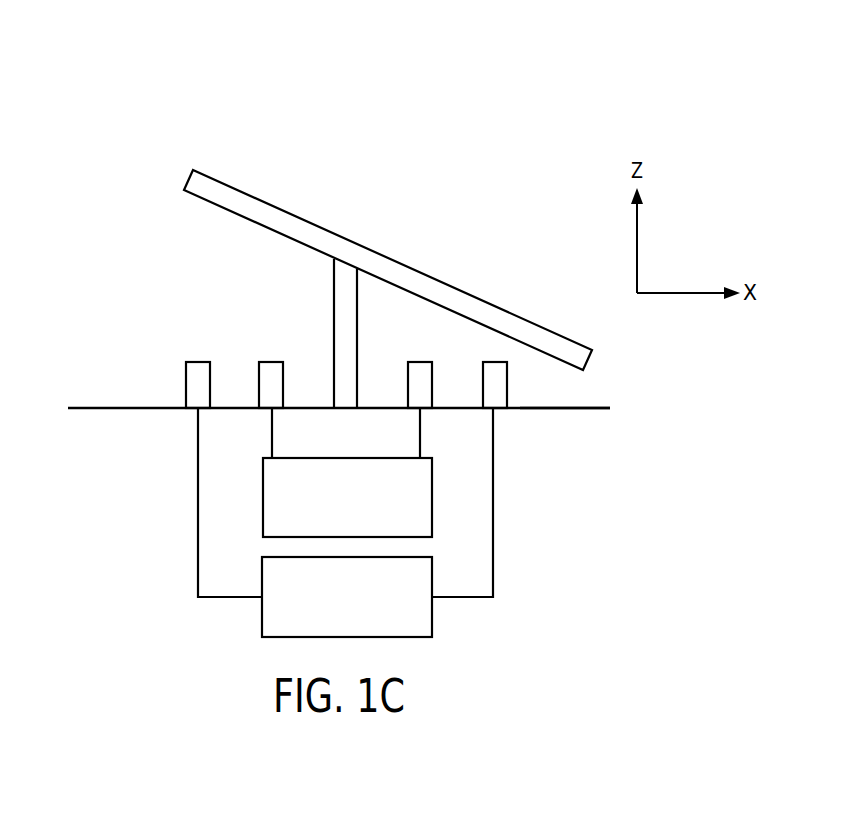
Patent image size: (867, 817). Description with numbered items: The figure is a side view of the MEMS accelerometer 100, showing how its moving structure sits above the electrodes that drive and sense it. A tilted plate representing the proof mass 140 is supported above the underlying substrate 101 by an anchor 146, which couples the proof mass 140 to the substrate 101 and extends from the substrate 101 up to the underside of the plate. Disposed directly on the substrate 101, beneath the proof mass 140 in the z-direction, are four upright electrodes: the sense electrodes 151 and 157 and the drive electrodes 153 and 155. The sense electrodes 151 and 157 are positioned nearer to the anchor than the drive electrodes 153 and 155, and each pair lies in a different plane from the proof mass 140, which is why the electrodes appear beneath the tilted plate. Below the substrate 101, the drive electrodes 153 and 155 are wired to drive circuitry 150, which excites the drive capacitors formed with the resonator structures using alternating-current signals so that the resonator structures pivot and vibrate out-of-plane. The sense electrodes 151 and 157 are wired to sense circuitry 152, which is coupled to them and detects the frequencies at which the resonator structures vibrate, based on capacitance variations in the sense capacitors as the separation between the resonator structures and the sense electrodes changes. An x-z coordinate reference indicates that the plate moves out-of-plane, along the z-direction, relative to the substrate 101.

The MEMS accelerometer 100 is at (148, 110).
The substrate 101 is at (585, 420).
The proof mass 140 is at (543, 337).
The anchor 146 is at (333, 283).
The drive circuitry 150 is at (262, 490).
The sense electrode 151 is at (495, 362).
The sense circuitry 152 is at (262, 580).
The drive electrode 153 is at (418, 362).
The drive electrode 155 is at (268, 362).
The sense electrode 157 is at (190, 362).